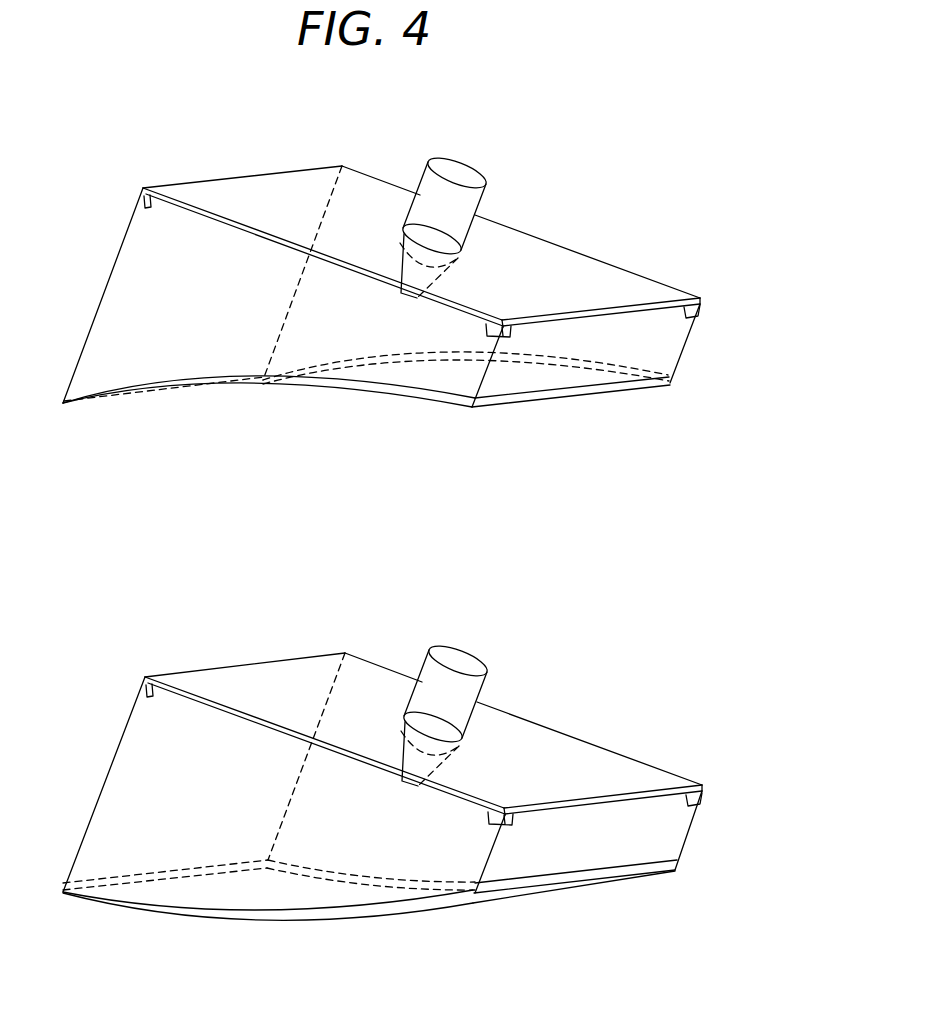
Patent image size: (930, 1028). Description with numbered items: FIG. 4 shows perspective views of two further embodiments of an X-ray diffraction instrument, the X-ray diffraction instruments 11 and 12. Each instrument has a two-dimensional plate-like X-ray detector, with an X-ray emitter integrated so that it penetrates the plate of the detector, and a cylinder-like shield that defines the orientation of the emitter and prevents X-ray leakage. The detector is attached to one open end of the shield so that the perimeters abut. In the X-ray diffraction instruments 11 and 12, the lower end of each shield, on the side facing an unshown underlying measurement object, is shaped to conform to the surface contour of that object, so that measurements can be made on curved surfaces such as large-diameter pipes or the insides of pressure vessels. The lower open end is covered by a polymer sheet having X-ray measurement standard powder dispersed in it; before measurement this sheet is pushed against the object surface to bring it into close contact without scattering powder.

The X-ray diffraction instrument 11 is at (588, 176).
The X-ray diffraction instrument 12 is at (590, 665).